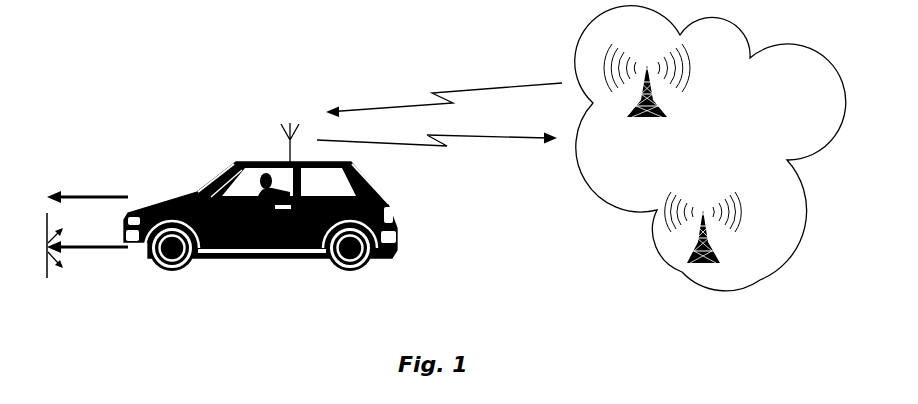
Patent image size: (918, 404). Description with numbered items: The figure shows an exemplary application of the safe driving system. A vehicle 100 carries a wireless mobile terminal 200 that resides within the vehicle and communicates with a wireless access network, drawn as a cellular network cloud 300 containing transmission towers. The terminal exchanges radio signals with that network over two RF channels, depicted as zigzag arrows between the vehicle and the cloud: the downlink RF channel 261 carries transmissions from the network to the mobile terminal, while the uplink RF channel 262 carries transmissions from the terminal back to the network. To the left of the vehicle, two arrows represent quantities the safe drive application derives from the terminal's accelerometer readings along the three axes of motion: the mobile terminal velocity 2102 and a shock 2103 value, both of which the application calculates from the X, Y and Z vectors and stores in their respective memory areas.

The vehicle 100 is at (285, 255).
The wireless mobile terminal 200 is at (290, 123).
The downlink RF channel 261 is at (493, 87).
The uplink RF channel 262 is at (487, 137).
The mobile terminal velocity 2102 is at (82, 194).
The shock 2103 is at (103, 249).
The cellular network 300 is at (657, 210).